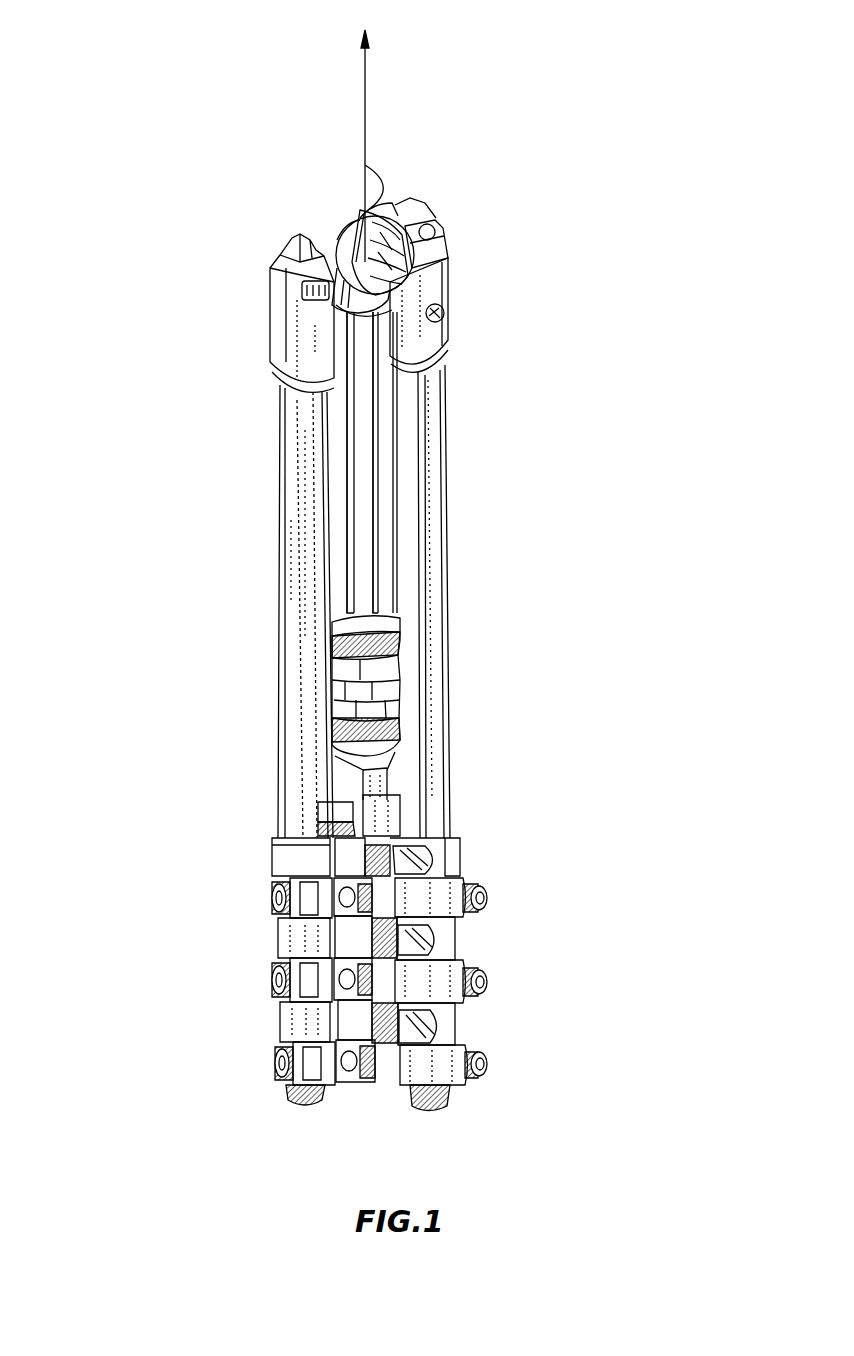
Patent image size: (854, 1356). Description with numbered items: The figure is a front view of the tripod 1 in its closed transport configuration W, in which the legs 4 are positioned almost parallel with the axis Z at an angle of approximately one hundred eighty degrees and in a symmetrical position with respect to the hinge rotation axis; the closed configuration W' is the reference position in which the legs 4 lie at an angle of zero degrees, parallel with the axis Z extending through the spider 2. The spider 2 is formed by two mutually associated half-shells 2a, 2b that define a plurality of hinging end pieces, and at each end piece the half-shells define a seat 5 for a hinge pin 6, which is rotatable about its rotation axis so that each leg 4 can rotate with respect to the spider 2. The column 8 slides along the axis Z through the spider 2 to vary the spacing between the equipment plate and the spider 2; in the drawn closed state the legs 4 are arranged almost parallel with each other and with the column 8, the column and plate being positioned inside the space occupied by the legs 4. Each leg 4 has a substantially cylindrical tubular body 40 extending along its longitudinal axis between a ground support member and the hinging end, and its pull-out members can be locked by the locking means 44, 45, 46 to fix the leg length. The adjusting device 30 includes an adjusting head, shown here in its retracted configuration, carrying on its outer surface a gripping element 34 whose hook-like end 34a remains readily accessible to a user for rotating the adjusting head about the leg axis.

The tripod 1 is at (130, 371).
The spider 2 is at (483, 246).
The half-shell 2a is at (407, 212).
The half-shell 2b is at (409, 266).
The leg 4 is at (240, 678).
The seat 5 is at (358, 234).
The hinge pin 6 is at (392, 206).
The column 8 is at (362, 462).
The adjusting device 30 is at (462, 233).
The gripping element 34 is at (255, 298).
The hook-like end 34a is at (270, 292).
The tubular body 40 is at (453, 780).
The locking means 44 is at (486, 897).
The locking means 45 is at (486, 981).
The locking means 46 is at (473, 1080).
The axis Z is at (368, 74).
The closed transport configuration W is at (622, 594).
The closed configuration W' is at (606, 254).